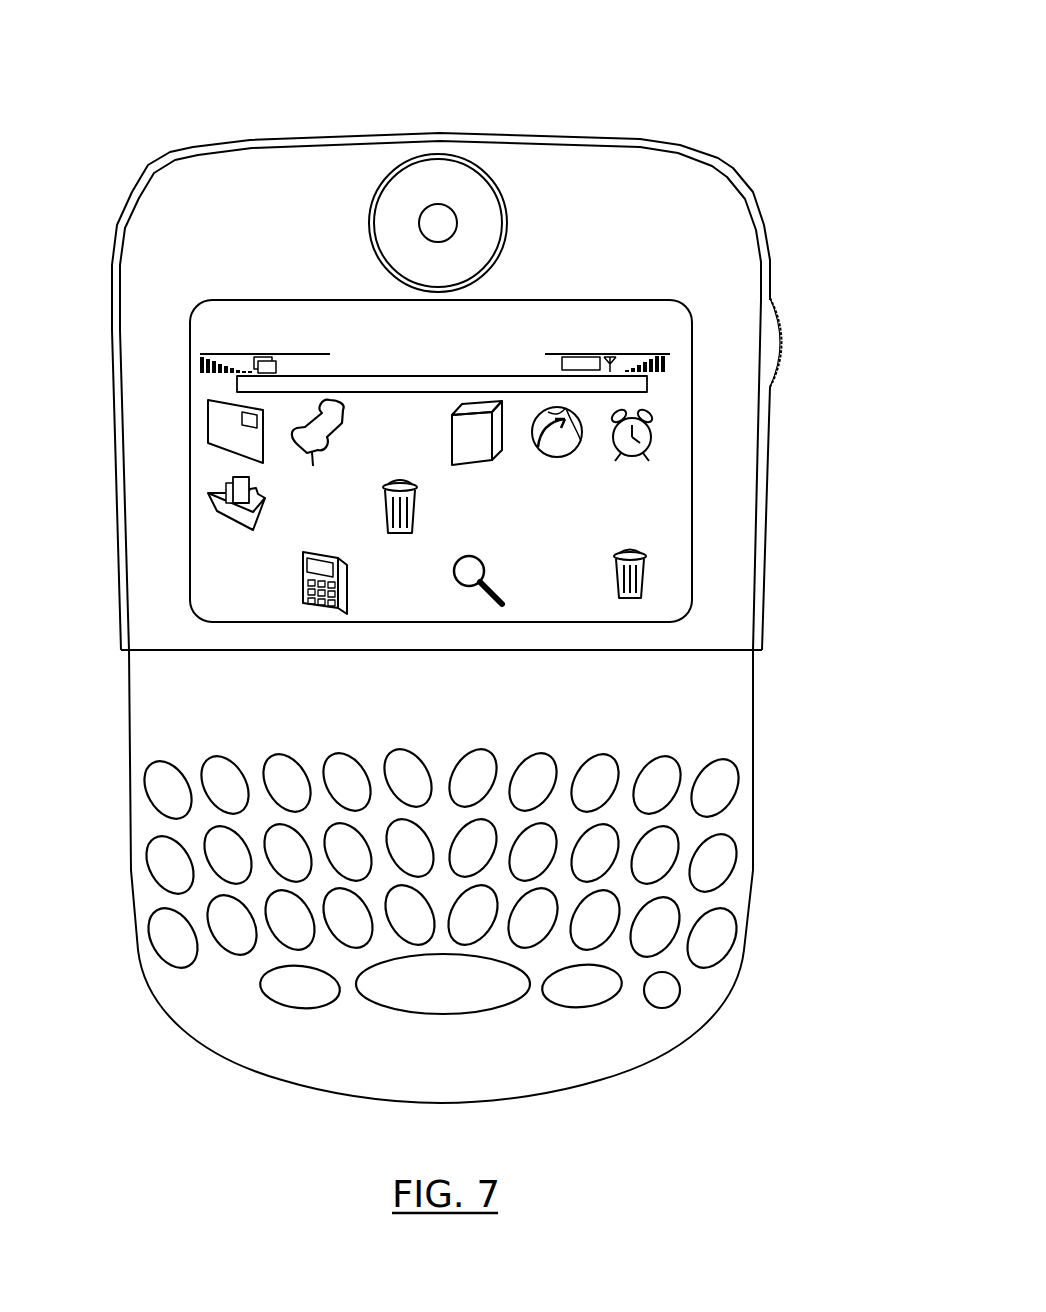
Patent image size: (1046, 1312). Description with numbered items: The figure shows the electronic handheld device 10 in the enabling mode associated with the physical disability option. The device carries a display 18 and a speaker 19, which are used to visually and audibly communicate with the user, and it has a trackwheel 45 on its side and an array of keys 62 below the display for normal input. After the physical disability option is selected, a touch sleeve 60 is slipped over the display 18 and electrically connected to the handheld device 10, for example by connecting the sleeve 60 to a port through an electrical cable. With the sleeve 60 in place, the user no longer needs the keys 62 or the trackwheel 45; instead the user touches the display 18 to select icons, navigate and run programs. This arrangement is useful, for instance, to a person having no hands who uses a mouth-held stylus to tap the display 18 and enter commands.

The electronic handheld device 10 is at (600, 115).
The display 18 is at (553, 590).
The speaker 19 is at (424, 195).
The trackwheel 45 is at (782, 370).
The touch sleeve 60 is at (193, 148).
The keys 62 is at (178, 950).